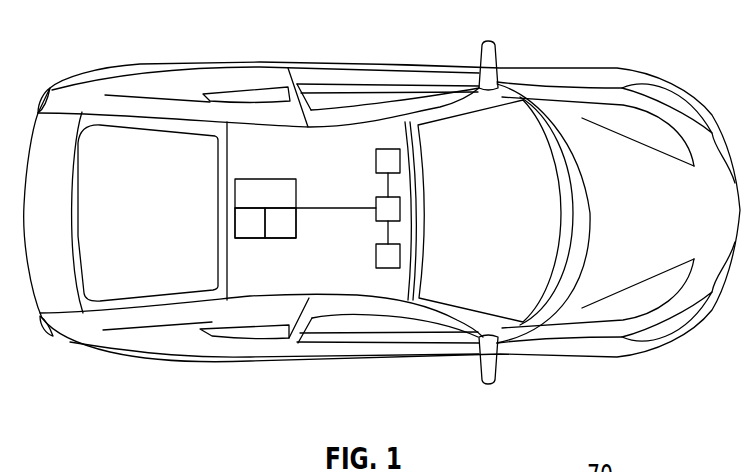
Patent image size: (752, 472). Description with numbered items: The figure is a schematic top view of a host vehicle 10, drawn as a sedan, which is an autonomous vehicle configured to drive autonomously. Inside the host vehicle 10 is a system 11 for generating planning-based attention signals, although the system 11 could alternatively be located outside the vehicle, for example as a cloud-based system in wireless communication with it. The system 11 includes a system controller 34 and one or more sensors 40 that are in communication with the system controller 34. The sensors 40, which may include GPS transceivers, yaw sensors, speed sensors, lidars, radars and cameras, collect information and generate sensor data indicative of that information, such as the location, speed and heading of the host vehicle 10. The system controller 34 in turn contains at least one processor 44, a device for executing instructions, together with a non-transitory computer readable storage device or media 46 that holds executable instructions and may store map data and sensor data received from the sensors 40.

The host vehicle 10 is at (593, 82).
The system 11 is at (340, 142).
The system controller 34 is at (265, 178).
The sensors 40 is at (400, 163).
The processor 44 is at (252, 238).
The non-transitory computer readable storage device or media 46 is at (282, 238).